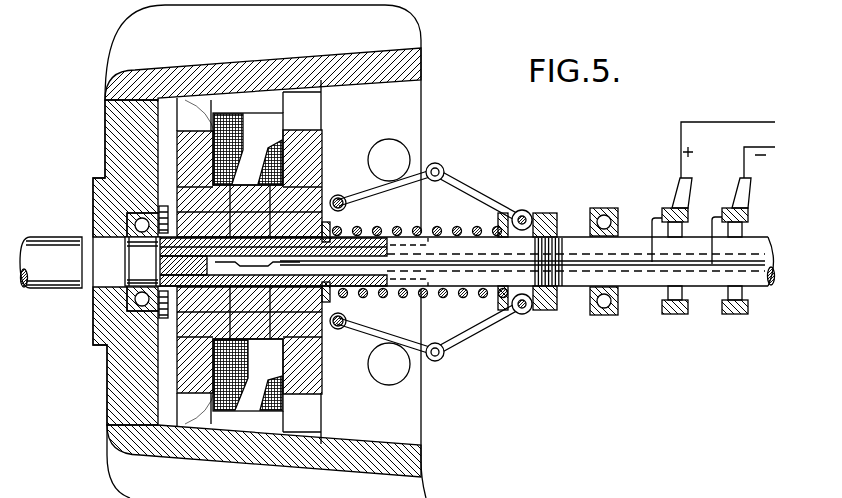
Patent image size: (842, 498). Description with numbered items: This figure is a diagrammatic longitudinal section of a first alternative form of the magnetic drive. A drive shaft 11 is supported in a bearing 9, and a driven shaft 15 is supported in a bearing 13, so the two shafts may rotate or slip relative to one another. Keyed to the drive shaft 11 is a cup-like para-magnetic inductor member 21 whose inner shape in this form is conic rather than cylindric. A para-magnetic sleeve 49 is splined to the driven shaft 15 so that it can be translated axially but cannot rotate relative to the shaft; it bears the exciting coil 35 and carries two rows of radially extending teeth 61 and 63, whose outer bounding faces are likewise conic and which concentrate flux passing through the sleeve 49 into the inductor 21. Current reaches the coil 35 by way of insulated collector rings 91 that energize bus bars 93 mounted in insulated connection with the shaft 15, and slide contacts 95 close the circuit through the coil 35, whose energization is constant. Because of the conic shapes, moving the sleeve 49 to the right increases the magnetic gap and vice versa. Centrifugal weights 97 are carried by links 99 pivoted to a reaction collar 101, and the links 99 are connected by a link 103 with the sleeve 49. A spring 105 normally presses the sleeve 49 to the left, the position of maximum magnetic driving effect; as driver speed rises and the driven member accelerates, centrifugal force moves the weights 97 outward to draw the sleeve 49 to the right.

The bearing 9 is at (130, 212).
The drive shaft 11 is at (63, 238).
The bearing 13 is at (604, 309).
The driven shaft 15 is at (757, 278).
The inductor member 21 is at (415, 63).
The exciting coil 35 is at (248, 262).
The sleeve 49 is at (306, 184).
The teeth 61 is at (185, 106).
The teeth 63 is at (307, 102).
The collector rings 91 is at (667, 209).
The bus bars 93 is at (572, 268).
The slide contacts 95 is at (343, 209).
The centrifugal weights 97 is at (389, 145).
The links 99 is at (490, 188).
The reaction collar 101 is at (537, 212).
The link 103 is at (381, 187).
The spring 105 is at (447, 299).